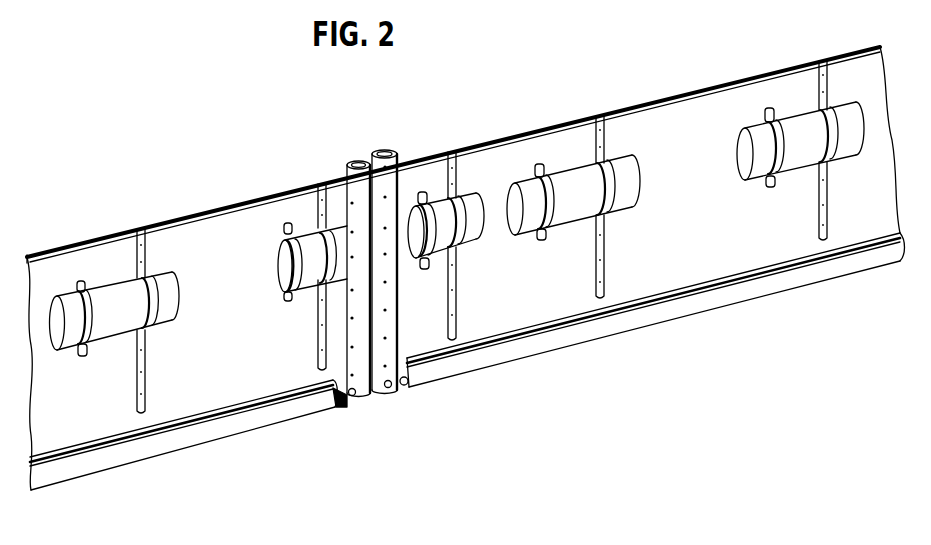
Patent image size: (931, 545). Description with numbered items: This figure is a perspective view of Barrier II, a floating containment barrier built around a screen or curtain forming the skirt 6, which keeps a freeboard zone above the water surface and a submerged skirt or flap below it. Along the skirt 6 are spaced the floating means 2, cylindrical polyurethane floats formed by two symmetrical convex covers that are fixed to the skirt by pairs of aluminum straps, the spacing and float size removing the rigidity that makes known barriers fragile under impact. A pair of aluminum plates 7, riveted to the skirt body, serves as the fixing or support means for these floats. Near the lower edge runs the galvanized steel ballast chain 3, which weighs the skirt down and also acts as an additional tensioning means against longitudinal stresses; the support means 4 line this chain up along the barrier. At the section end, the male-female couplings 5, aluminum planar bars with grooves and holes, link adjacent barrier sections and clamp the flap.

The floating means 2 is at (124, 317).
The ballast chain 3 is at (347, 400).
The support means 4 is at (238, 423).
The male-female couplings 5 is at (382, 151).
The skirt 6 is at (248, 335).
The aluminum plates 7 is at (537, 166).